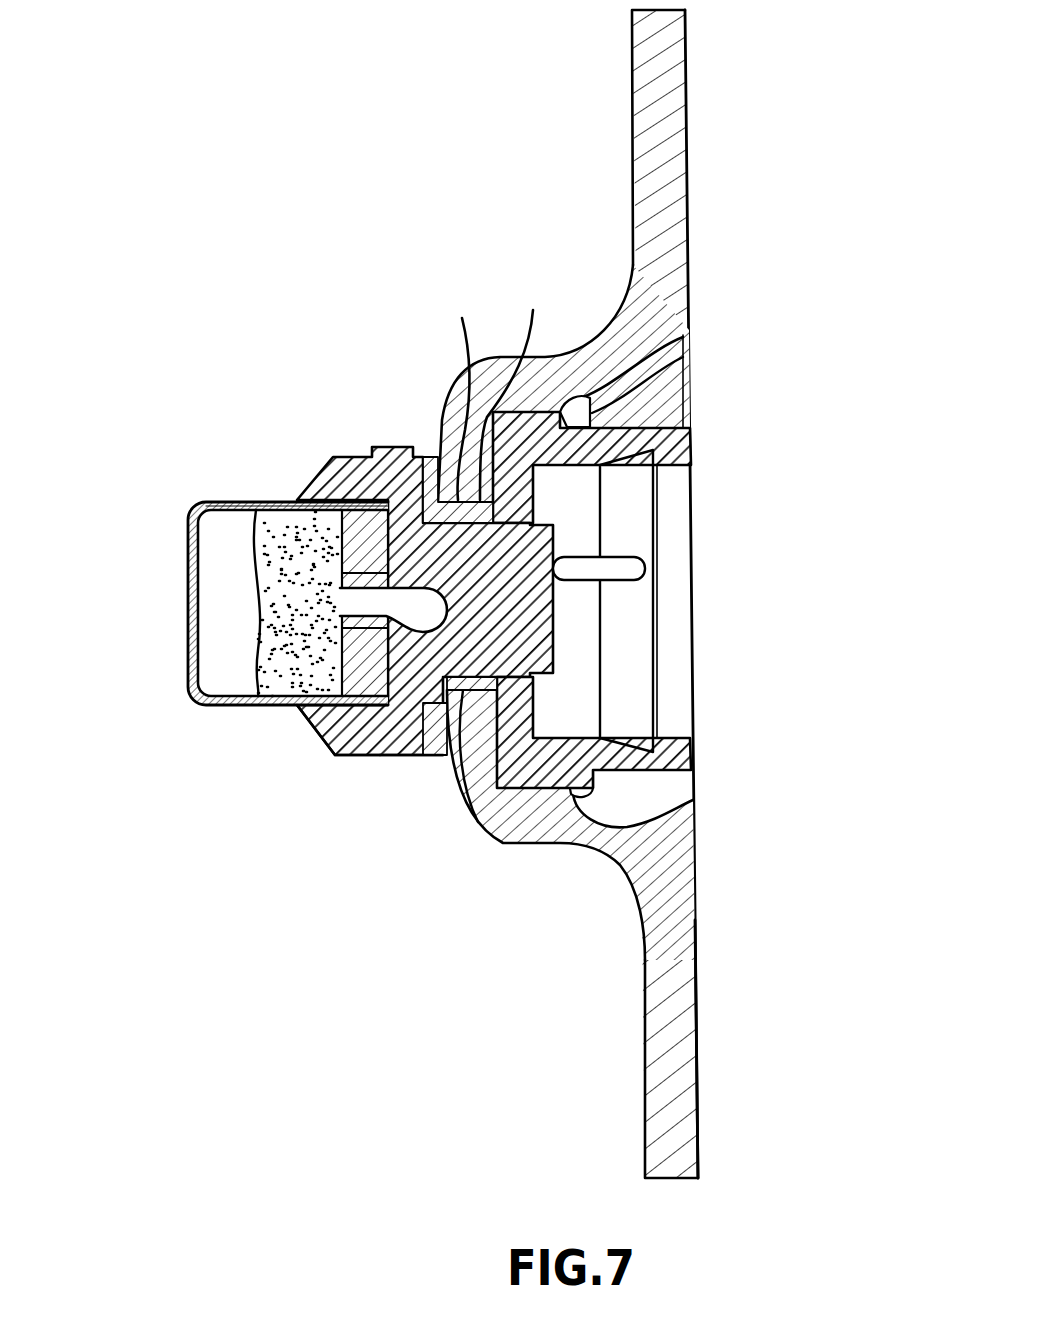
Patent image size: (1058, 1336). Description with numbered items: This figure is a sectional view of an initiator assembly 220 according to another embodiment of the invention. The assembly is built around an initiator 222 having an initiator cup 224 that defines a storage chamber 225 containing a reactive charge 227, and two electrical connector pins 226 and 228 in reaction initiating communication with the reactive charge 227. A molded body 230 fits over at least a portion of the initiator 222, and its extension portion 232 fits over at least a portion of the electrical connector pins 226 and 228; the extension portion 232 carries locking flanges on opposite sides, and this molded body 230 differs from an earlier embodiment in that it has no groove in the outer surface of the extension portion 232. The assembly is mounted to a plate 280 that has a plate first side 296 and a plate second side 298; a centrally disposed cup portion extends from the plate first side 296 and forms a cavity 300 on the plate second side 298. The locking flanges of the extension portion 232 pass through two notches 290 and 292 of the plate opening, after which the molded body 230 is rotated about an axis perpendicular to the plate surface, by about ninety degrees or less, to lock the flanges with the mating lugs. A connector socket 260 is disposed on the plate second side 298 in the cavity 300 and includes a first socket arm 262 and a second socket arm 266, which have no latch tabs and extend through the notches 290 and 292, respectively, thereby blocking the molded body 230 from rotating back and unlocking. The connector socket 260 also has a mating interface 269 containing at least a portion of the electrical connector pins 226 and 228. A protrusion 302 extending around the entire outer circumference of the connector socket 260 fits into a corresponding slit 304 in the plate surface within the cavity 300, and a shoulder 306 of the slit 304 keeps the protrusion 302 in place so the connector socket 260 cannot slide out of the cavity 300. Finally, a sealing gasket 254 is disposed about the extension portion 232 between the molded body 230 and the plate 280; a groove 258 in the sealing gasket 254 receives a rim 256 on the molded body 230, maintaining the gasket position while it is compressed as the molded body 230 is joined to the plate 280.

The initiator assembly 220 is at (855, 283).
The initiator 222 is at (219, 712).
The initiator cup 224 is at (210, 500).
The storage chamber 225 is at (215, 625).
The electrical connector pin 226 is at (350, 755).
The reactive charge 227 is at (270, 528).
The electrical connector pin 228 is at (693, 562).
The molded body 230 is at (383, 760).
The extension portion 232 is at (693, 640).
The sealing gasket 254 is at (380, 756).
The rim 256 is at (437, 450).
The groove 258 is at (445, 756).
The connector socket 260 is at (693, 442).
The first socket arm 262 is at (503, 745).
The second socket arm 266 is at (462, 318).
The mating interface 269 is at (693, 717).
The plate 280 is at (690, 115).
The notch 290 is at (480, 745).
The notch 292 is at (533, 310).
The plate first side 296 is at (645, 1032).
The plate second side 298 is at (697, 1047).
The cavity 300 is at (698, 366).
The protrusion 302 is at (690, 394).
The slit 304 is at (693, 801).
The shoulder 306 is at (688, 313).